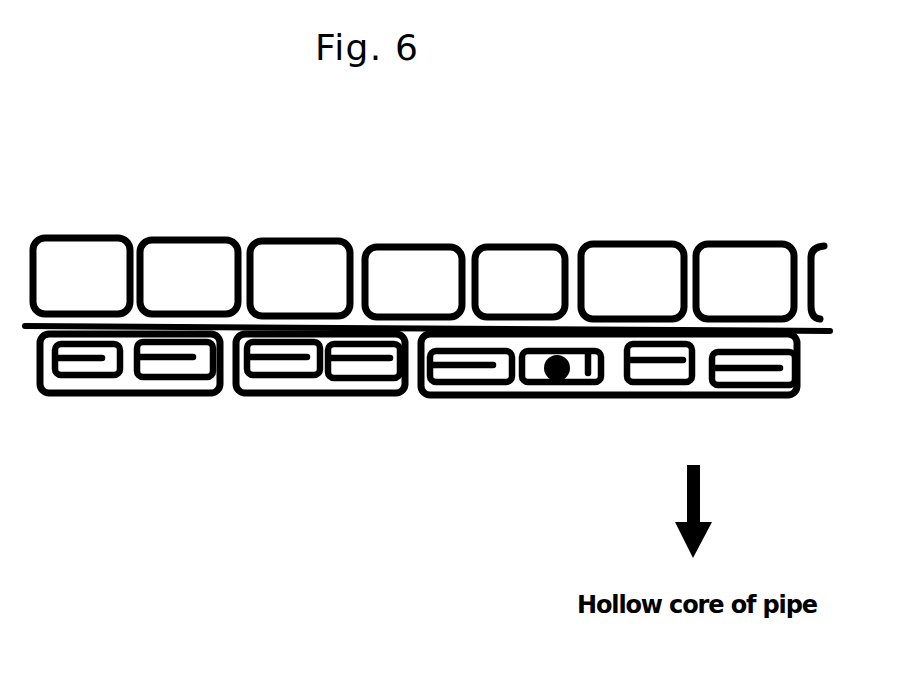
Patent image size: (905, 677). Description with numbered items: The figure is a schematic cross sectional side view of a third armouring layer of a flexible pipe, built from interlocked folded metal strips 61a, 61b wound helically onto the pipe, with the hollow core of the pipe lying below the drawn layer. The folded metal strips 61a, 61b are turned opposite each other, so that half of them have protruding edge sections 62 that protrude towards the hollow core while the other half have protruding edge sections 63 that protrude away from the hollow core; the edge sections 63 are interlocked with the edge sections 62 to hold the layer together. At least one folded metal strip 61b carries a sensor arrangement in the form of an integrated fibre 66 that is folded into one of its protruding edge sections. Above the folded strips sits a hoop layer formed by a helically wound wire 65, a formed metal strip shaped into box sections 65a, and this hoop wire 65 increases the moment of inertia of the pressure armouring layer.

The helically wound wire 65 is at (432, 240).
The box section 65a is at (318, 281).
The folded metal strip 61a is at (244, 409).
The folded metal strip 61b is at (415, 336).
The protruding edge section 62 is at (164, 382).
The protruding edge section 63 is at (356, 394).
The integrated fibre 66 is at (564, 378).